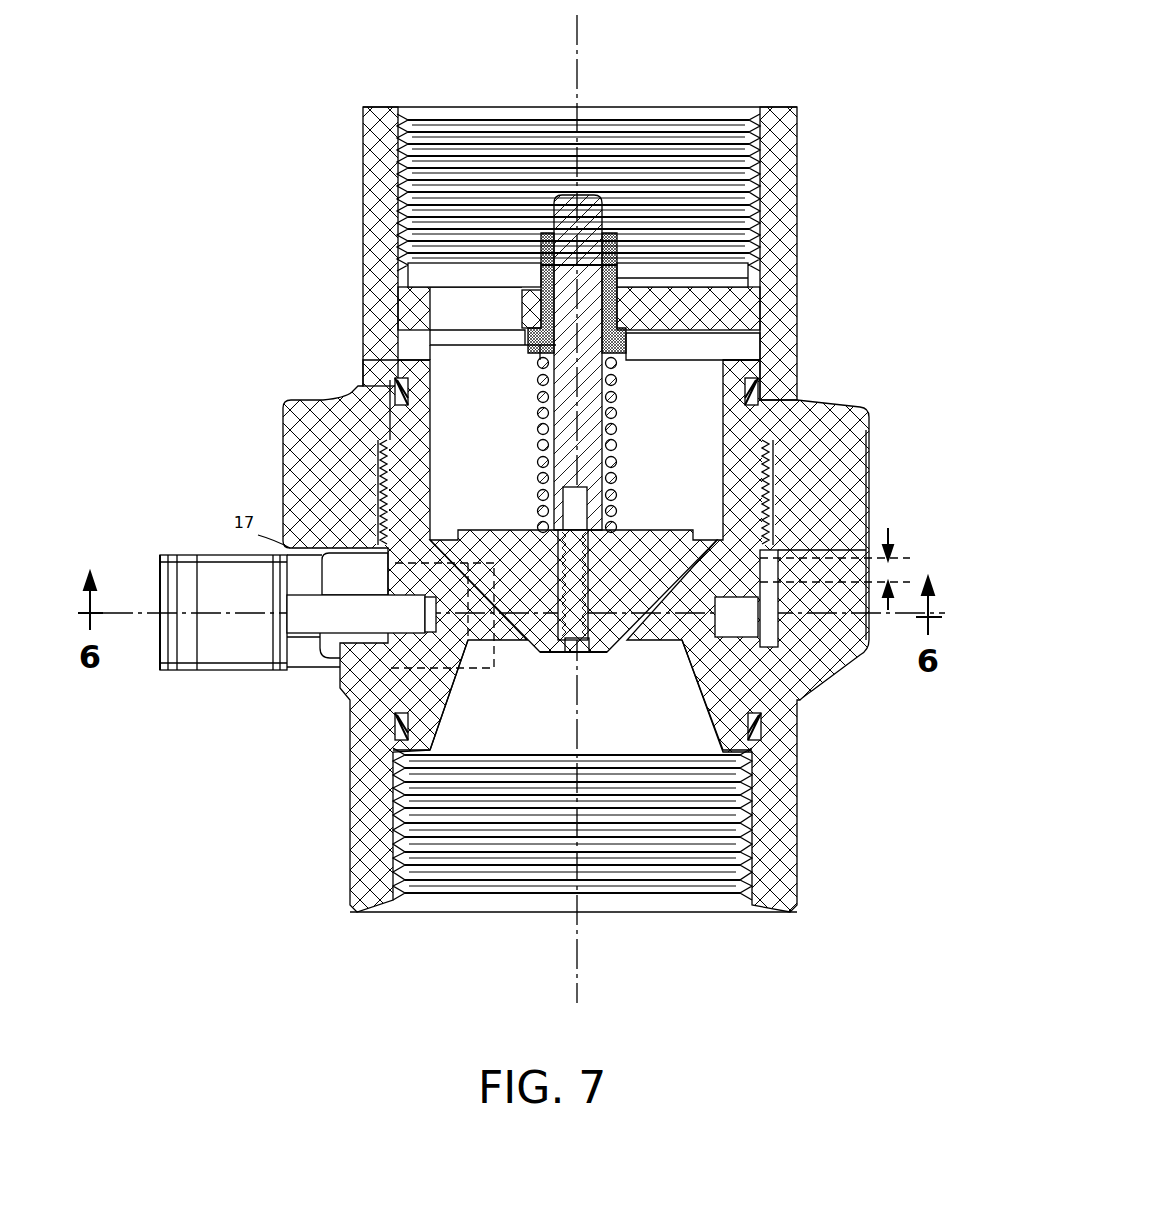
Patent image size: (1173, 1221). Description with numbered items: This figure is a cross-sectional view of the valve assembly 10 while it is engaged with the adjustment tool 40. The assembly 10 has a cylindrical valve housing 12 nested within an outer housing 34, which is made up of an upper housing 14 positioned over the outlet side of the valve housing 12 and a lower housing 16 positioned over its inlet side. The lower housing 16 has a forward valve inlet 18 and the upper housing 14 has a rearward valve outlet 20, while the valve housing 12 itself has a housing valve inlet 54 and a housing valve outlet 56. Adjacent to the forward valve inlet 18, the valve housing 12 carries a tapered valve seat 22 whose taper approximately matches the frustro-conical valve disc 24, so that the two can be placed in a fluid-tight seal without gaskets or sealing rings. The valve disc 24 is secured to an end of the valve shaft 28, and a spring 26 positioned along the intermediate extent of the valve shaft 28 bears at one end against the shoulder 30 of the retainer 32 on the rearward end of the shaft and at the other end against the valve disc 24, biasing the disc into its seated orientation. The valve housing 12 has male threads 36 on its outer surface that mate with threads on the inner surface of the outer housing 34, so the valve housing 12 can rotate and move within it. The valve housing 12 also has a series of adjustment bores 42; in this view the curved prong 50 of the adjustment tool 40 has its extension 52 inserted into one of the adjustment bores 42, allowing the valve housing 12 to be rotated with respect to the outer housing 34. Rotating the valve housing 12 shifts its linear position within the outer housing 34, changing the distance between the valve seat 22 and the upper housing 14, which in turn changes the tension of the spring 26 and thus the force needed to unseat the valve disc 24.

The assembly 10 is at (226, 103).
The valve housing 12 is at (770, 432).
The upper housing 14 is at (800, 205).
The lower housing 16 is at (800, 775).
The forward valve inlet 18 is at (697, 920).
The rearward valve outlet 20 is at (730, 107).
The tapered valve seat 22 is at (705, 560).
The valve disc 24 is at (525, 645).
The spring 26 is at (540, 452).
The valve shaft 28 is at (585, 390).
The shoulder 30 is at (748, 278).
The retainer 32 is at (628, 346).
The outer housing 34 is at (352, 390).
The male threads 36 is at (775, 497).
The adjustment tool 40 is at (172, 555).
The adjustment bores 42 is at (435, 632).
The curved prong 50 is at (197, 670).
The extension 52 is at (318, 640).
The housing valve inlet 54 is at (660, 733).
The housing valve outlet 56 is at (473, 370).